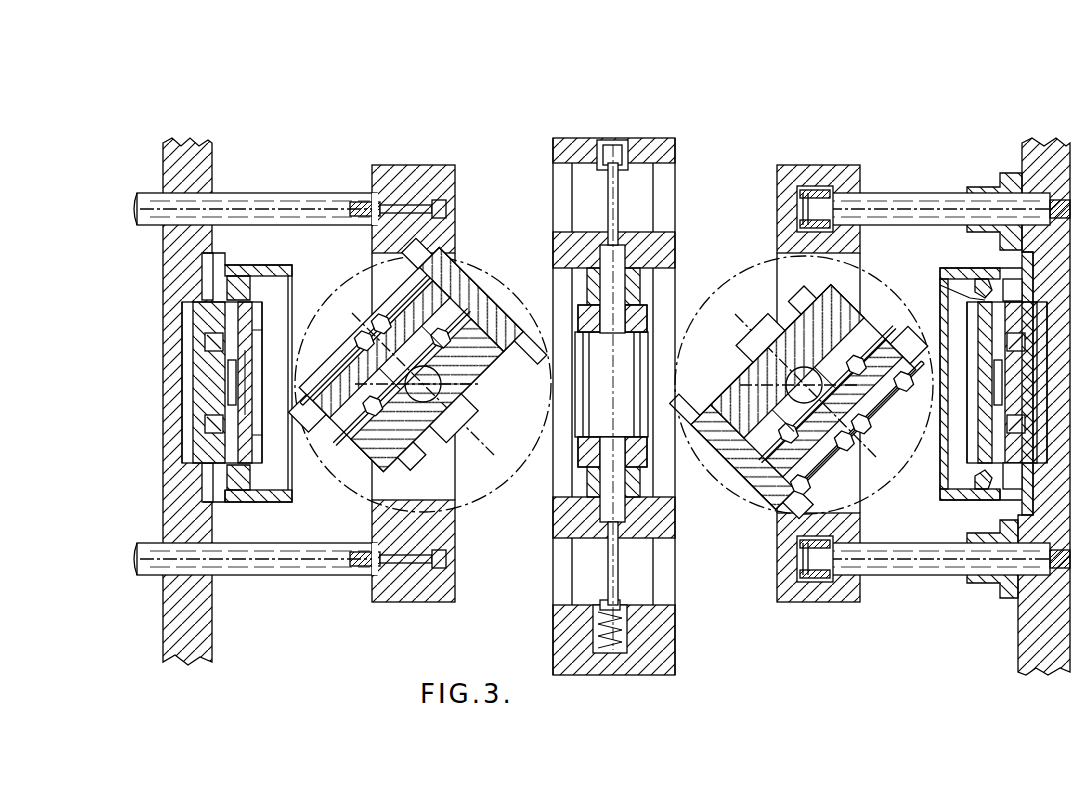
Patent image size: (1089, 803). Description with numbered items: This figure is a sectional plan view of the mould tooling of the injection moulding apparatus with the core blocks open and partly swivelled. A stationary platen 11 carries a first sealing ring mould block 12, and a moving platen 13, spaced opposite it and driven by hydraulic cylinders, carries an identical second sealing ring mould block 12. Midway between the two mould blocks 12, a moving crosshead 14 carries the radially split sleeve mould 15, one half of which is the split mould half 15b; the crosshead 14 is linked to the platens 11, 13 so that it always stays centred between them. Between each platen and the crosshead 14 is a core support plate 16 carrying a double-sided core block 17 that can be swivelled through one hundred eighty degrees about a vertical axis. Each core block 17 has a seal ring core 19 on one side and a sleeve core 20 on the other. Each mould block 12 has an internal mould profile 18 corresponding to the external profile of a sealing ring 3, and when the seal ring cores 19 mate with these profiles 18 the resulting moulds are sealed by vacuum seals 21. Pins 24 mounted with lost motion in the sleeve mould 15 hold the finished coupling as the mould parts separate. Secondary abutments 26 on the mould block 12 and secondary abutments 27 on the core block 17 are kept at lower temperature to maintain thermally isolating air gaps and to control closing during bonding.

The stationary platen 11 is at (1018, 632).
The sealing ring mould block 12 is at (962, 495).
The moving platen 13 is at (205, 652).
The moving crosshead 14 is at (553, 632).
The radially split mould 15 is at (553, 458).
The second split mould half 15b is at (650, 300).
The core support plate 16 is at (402, 590).
The double-sided core block 17 is at (498, 300).
The internal mould profile 18 is at (262, 350).
The seal ring core 19 is at (345, 372).
The sleeve core 20 is at (462, 456).
The vacuum seal 21 is at (245, 285).
The pin 24 is at (625, 258).
The secondary abutment 26 is at (950, 265).
The secondary abutment 27 is at (935, 338).
The sealing ring 3 is at (895, 395).